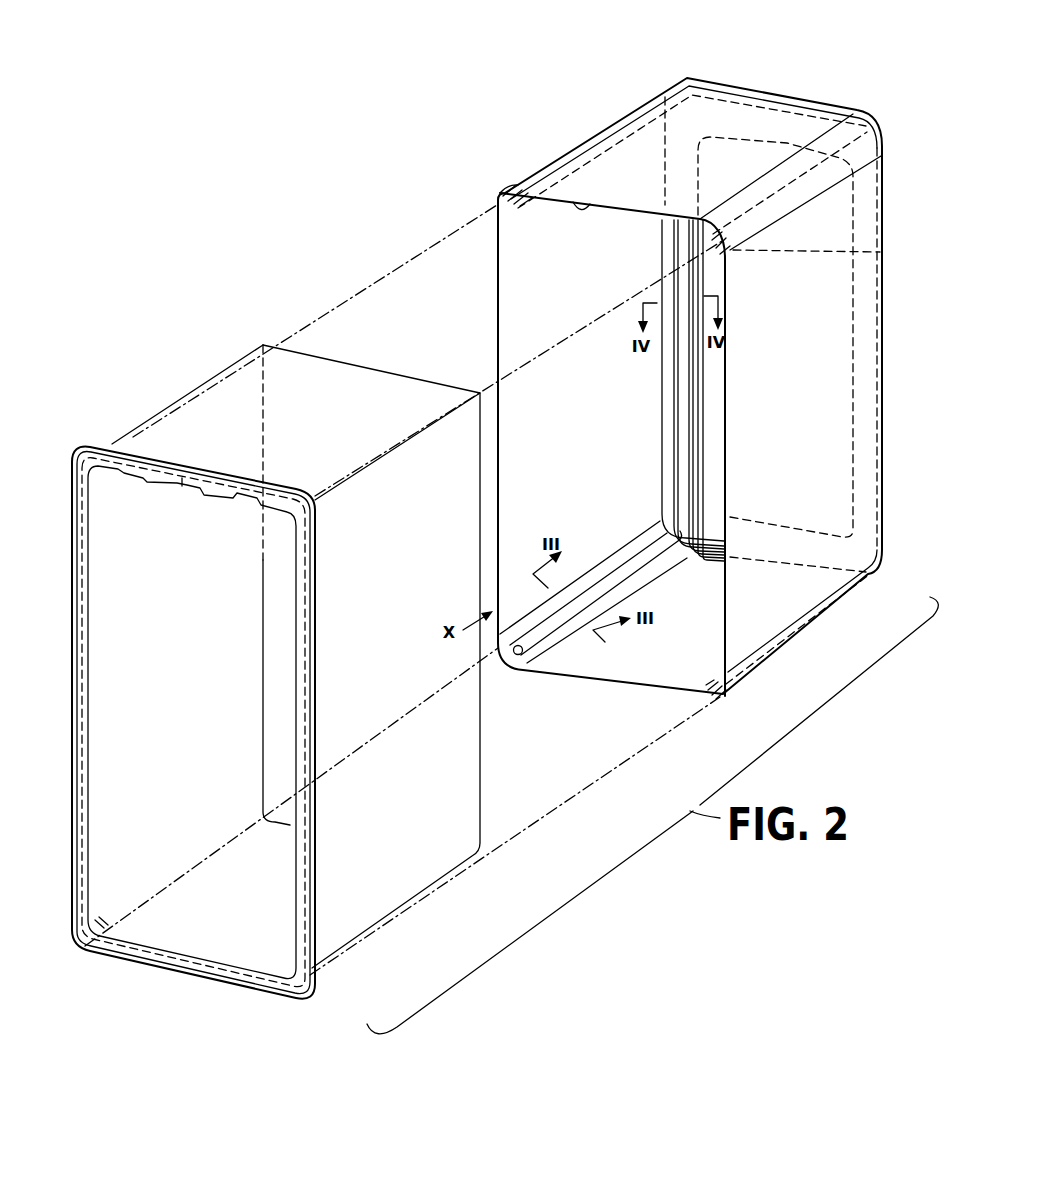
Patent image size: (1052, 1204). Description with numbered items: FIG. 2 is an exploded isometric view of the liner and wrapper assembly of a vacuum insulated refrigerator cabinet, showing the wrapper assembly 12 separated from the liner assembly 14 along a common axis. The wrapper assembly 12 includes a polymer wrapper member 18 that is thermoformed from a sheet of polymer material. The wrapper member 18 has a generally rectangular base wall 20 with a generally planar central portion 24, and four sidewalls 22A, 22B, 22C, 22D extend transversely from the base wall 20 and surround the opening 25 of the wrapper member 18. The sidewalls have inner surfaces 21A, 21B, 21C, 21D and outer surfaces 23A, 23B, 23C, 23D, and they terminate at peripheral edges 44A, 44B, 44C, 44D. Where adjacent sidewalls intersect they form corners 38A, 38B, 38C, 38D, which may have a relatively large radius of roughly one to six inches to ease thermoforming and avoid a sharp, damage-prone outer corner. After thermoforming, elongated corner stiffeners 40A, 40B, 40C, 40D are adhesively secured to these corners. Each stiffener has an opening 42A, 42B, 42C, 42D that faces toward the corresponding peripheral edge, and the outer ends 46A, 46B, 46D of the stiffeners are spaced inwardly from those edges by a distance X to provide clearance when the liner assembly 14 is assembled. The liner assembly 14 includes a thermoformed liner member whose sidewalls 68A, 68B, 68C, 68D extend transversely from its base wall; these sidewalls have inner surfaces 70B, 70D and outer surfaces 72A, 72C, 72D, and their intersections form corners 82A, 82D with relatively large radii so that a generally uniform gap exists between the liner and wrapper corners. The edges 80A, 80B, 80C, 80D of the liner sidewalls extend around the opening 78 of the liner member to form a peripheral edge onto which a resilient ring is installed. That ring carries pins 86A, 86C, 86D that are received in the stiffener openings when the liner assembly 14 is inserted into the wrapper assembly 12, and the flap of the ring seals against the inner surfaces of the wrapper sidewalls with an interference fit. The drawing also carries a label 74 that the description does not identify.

The wrapper assembly 12 is at (688, 72).
The liner assembly 14 is at (263, 332).
The polymer wrapper member 18 is at (787, 122).
The base wall 20 is at (710, 400).
The inner surface 21A is at (573, 200).
The inner surface 21B is at (817, 580).
The inner surface 21C is at (650, 683).
The inner surface 21D is at (517, 278).
The sidewall 22A is at (613, 163).
The sidewall 22B is at (803, 600).
The sidewall 22C is at (630, 663).
The sidewall 22D is at (514, 249).
The outer surface 23A is at (640, 140).
The outer surface 23B is at (763, 620).
The outer surface 23C is at (573, 700).
The outer surface 23D is at (497, 318).
The central portion 24 is at (713, 443).
The opening 25 is at (716, 472).
The corner 38A is at (514, 184).
The corner 38B is at (837, 145).
The corner 38C is at (752, 665).
The corner 38D is at (483, 647).
The elongated corner stiffener 40A is at (508, 197).
The elongated corner stiffener 40B is at (823, 192).
The elongated corner stiffener 40C is at (707, 697).
The elongated corner stiffener 40D is at (567, 668).
The opening 42A is at (530, 187).
The opening 42B is at (733, 260).
The opening 42C is at (703, 680).
The opening 42D is at (550, 660).
The peripheral edge 44A is at (613, 206).
The peripheral edge 44B is at (743, 683).
The peripheral edge 44C is at (590, 690).
The peripheral edge 44D is at (497, 490).
The outer end 46A is at (497, 205).
The outer end 46B is at (880, 252).
The outer end 46D is at (492, 680).
The sidewall 68A is at (233, 402).
The sidewall 68B is at (143, 930).
The sidewall 68C is at (217, 930).
The sidewall 68D is at (120, 720).
The inner surface 70B is at (297, 908).
The inner surface 70D is at (127, 777).
The outer surface 72A is at (172, 425).
The outer surface 72C is at (192, 978).
The outer surface 72D is at (75, 640).
The inner panel 74 is at (273, 680).
The opening 78 is at (110, 853).
The edge 80A is at (198, 462).
The edge 80B is at (320, 505).
The edge 80C is at (187, 930).
The edge 80D is at (73, 593).
The corner 82A is at (140, 447).
The corner 82D is at (100, 932).
The pin 86A is at (122, 438).
The pin 86C is at (316, 975).
The pin 86D is at (75, 912).